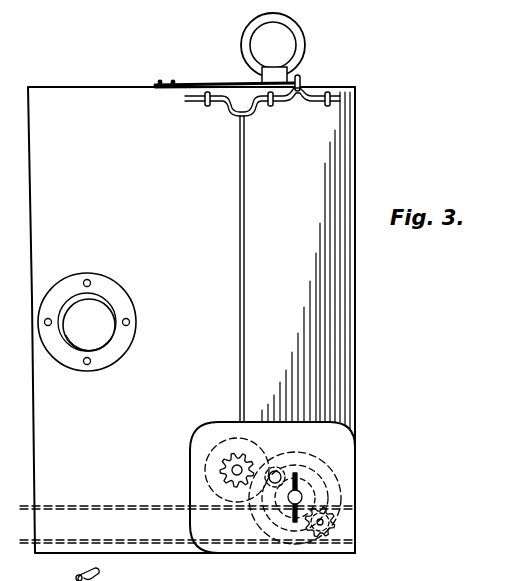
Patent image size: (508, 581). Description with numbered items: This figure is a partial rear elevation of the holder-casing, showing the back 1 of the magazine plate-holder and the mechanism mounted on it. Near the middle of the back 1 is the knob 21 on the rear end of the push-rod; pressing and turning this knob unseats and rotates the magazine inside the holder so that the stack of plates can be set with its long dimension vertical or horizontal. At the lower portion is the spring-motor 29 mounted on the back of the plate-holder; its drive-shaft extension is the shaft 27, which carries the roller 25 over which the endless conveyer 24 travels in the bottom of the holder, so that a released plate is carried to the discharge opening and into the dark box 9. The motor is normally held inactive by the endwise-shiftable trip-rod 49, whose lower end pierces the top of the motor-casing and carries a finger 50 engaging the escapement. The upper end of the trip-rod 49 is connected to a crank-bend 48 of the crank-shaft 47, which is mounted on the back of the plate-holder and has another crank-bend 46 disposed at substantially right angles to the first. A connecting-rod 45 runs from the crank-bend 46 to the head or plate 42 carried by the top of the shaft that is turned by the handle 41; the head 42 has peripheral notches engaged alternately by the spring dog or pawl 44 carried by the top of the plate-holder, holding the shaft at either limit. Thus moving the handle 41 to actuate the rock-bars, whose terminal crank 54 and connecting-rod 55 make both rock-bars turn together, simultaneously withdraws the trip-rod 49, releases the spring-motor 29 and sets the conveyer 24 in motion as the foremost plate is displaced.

The back 1 is at (191, 320).
The dark box 9 is at (4, 424).
The knob 21 is at (118, 309).
The endless conveyer 24 is at (24, 519).
The roller 25 is at (322, 538).
The shaft 27 is at (334, 521).
The spring-motor 29 is at (272, 487).
The handle 41 is at (299, 27).
The head or plate 42 is at (303, 86).
The spring dog or pawl 44 is at (212, 83).
The connecting-rod 45 is at (301, 77).
The crank-bend 46 is at (306, 102).
The crank-shaft 47 is at (266, 105).
The crank-bend 48 is at (228, 113).
The trip-rod 49 is at (245, 190).
The finger 50 is at (249, 452).
The terminal crank 54 is at (32, 580).
The connecting-rod 55 is at (99, 572).